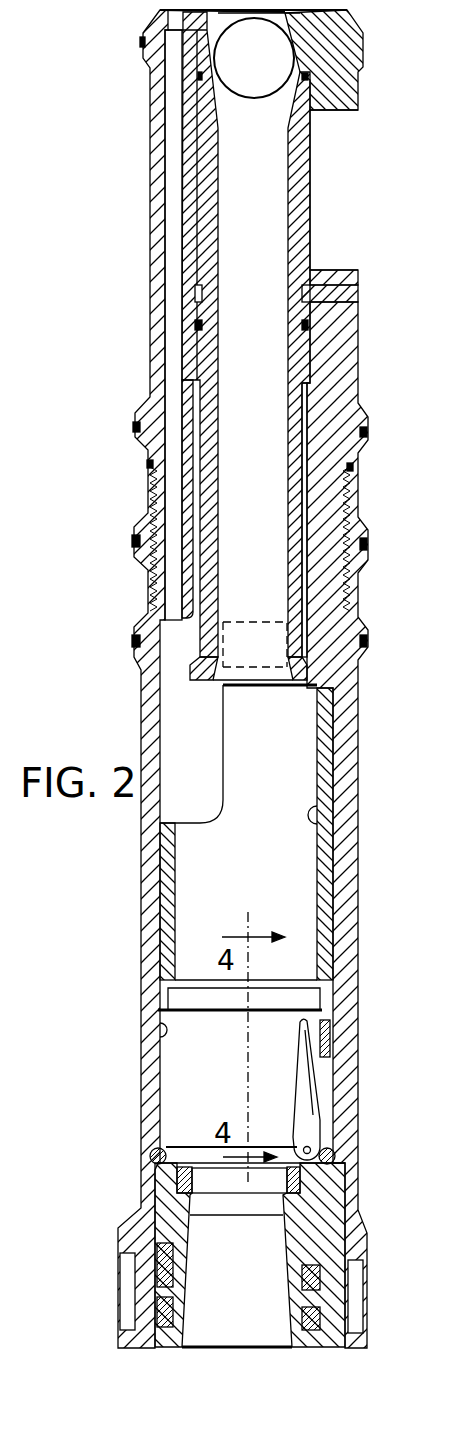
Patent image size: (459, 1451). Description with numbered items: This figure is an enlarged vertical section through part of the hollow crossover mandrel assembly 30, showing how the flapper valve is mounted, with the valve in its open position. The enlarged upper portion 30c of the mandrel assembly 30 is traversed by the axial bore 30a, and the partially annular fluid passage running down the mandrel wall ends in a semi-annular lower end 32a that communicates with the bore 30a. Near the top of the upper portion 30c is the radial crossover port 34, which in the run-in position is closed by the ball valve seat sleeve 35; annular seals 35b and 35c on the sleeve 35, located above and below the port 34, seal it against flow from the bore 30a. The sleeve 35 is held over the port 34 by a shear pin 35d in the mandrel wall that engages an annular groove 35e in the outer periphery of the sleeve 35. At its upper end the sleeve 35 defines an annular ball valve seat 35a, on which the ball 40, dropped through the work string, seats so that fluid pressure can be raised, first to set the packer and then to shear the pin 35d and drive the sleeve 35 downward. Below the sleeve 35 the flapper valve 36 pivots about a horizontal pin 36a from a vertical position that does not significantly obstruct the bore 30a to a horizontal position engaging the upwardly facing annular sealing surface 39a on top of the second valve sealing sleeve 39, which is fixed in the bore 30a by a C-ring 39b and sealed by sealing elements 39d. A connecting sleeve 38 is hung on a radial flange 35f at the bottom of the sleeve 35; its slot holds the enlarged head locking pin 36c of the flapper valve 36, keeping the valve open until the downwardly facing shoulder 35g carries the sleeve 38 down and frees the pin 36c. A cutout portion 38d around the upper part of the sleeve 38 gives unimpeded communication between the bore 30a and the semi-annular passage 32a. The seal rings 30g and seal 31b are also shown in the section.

The hollow crossover mandrel assembly 30 is at (364, 88).
The bore 30a is at (158, 1032).
The enlarged upper portion 30c is at (136, 426).
The seal rings 30g is at (150, 464).
The seal 31b is at (143, 46).
The semi-annular lower end 32a is at (173, 523).
The radial crossover port 34 is at (338, 144).
The ball valve seat sleeve 35 is at (297, 200).
The annular ball valve seat 35a is at (143, 32).
The annular seal 35b is at (198, 76).
The annular seal 35c is at (198, 326).
The shear pin 35d is at (356, 283).
The annular groove 35e is at (200, 297).
The radial flange 35f is at (195, 661).
The downwardly facing shoulder 35g is at (305, 388).
The flapper valve 36 is at (317, 1110).
The horizontal pin 36a is at (312, 1150).
The enlarged head locking pin 36c is at (329, 1043).
The connecting sleeve 38 is at (312, 825).
The cutout portion 38d is at (222, 740).
The second valve sealing sleeve 39 is at (167, 1183).
The annular sealing surface 39a is at (188, 1168).
The C-ring 39b is at (150, 1156).
The sealing elements 39d is at (163, 1310).
The ball 40 is at (275, 43).